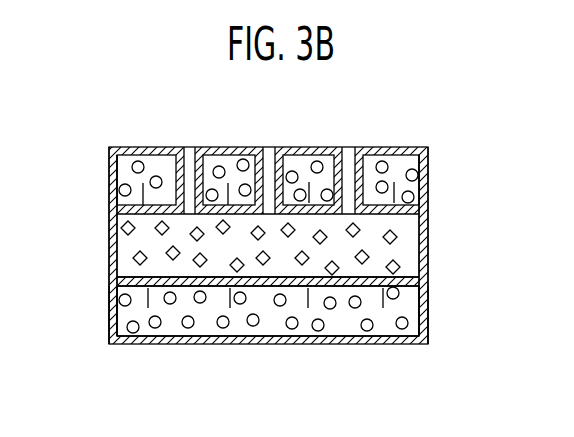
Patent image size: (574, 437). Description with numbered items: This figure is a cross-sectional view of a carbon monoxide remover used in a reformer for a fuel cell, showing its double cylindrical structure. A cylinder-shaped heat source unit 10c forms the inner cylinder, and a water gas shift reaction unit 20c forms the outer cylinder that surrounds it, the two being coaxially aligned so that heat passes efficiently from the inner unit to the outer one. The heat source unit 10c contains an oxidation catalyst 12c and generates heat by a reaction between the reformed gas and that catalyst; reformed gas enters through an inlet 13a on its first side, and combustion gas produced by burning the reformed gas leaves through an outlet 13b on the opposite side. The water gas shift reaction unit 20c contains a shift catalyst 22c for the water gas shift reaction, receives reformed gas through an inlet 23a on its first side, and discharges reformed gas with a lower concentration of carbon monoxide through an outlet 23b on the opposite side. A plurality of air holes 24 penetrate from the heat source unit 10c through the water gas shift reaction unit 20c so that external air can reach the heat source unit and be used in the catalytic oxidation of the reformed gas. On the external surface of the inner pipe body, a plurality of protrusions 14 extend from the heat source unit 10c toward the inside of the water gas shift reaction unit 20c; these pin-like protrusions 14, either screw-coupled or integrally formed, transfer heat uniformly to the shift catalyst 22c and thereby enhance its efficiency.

The heat source unit 10c is at (268, 286).
The oxidation catalyst 12c is at (112, 217).
The inlet 13a is at (112, 247).
The outlet 13b is at (428, 243).
The protrusions 14 is at (213, 167).
The water gas shift reaction unit 20c is at (343, 321).
The shift catalyst 22c is at (402, 329).
The inlet 23a is at (112, 308).
The outlet 23b is at (423, 310).
The air holes 24 is at (348, 163).